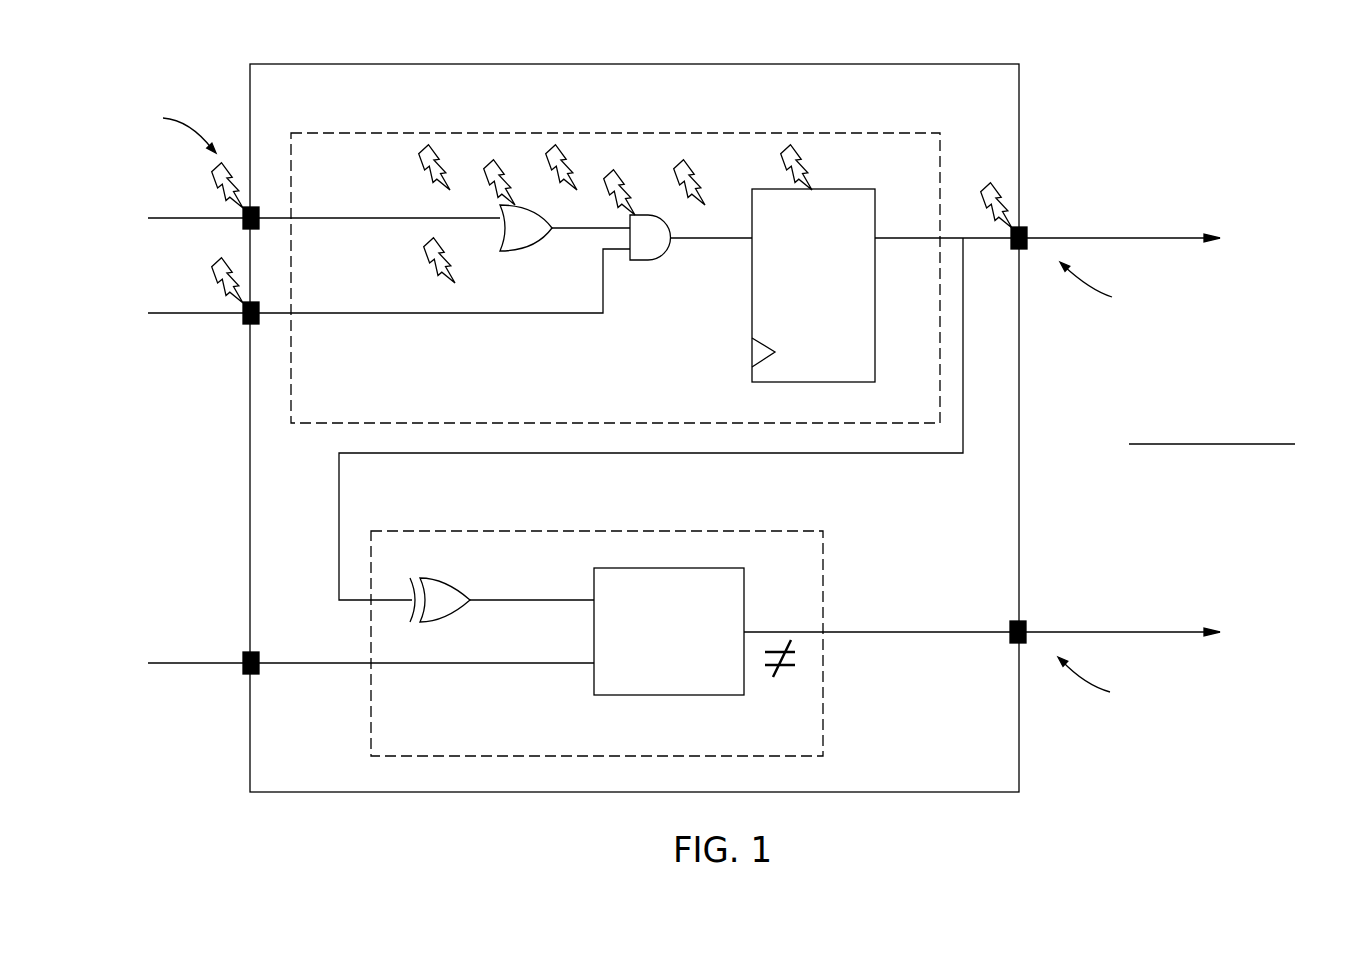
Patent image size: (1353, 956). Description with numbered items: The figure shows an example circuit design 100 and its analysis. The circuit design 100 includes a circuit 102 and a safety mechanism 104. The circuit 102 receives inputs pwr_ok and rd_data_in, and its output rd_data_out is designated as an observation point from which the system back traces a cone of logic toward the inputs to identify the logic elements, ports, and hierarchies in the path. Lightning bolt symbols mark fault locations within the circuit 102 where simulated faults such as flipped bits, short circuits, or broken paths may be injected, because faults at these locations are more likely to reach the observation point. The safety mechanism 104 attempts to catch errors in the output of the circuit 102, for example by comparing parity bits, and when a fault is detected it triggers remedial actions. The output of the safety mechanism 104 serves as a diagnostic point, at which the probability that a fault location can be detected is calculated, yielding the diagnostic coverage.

The circuit design 100 is at (1078, 50).
The circuit 102 is at (893, 133).
The safety mechanism 104 is at (776, 531).